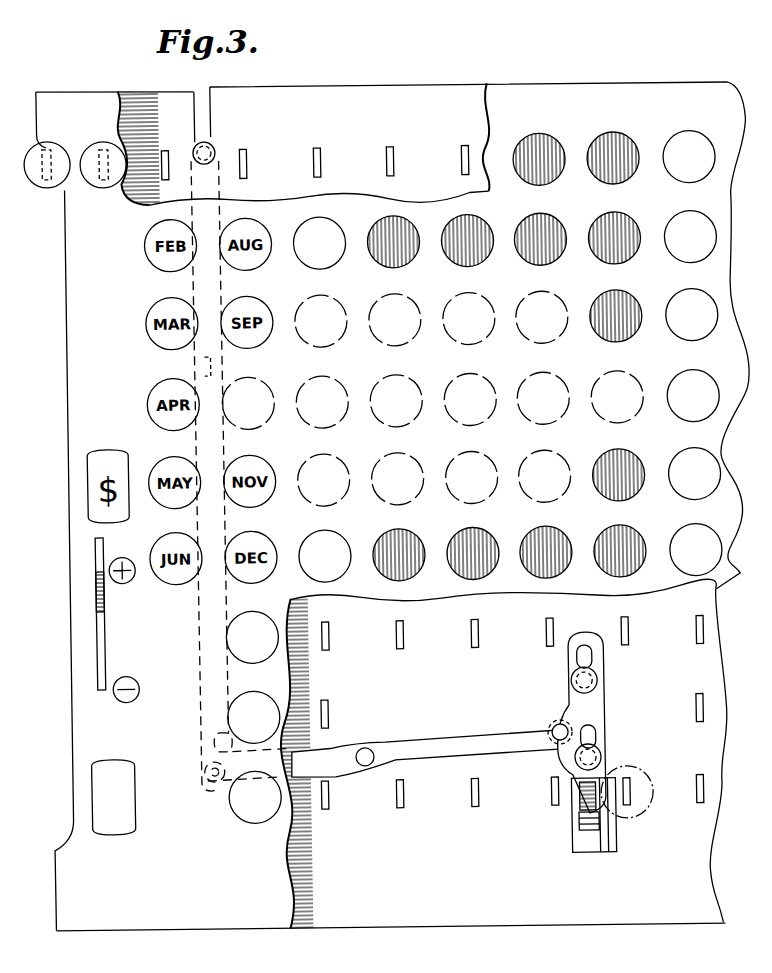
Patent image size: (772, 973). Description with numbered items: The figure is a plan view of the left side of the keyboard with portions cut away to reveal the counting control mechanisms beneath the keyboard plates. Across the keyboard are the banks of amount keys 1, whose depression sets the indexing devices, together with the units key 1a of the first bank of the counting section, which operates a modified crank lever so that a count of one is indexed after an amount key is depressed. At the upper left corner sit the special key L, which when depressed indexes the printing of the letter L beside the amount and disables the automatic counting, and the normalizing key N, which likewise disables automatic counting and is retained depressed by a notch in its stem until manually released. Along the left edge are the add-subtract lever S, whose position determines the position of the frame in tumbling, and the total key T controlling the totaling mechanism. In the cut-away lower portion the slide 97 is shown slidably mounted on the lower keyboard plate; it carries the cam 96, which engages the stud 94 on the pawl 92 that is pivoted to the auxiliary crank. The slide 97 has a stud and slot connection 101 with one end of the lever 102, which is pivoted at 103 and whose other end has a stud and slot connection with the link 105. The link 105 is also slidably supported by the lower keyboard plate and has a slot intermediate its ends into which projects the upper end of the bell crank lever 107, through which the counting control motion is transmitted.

The amount key 1 is at (674, 461).
The units key 1a is at (637, 779).
The pawl 92 is at (598, 848).
The stud 94 is at (580, 832).
The cam 96 is at (578, 800).
The slide 97 is at (597, 710).
The stud and slot connection 101 is at (550, 738).
The lever 102 is at (432, 743).
The pivot 103 is at (363, 747).
The link 105 is at (196, 618).
The bell crank lever 107 is at (207, 365).
The normalizing key N is at (51, 183).
The special key L is at (114, 181).
The add-subtract lever S is at (99, 552).
The total key T is at (93, 792).